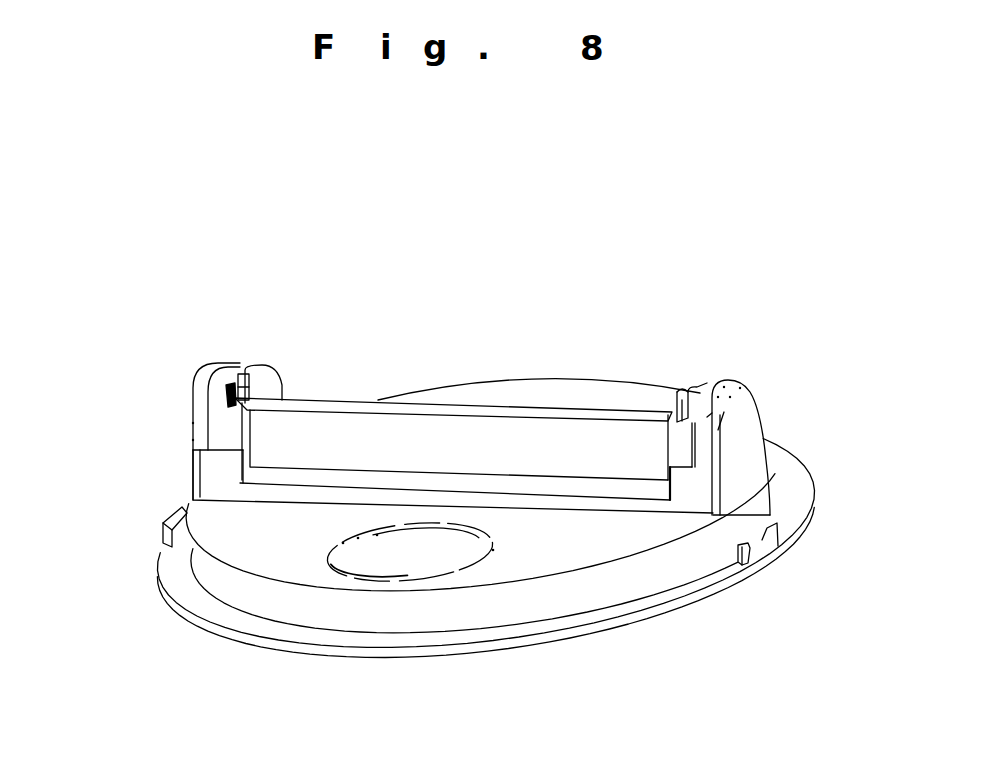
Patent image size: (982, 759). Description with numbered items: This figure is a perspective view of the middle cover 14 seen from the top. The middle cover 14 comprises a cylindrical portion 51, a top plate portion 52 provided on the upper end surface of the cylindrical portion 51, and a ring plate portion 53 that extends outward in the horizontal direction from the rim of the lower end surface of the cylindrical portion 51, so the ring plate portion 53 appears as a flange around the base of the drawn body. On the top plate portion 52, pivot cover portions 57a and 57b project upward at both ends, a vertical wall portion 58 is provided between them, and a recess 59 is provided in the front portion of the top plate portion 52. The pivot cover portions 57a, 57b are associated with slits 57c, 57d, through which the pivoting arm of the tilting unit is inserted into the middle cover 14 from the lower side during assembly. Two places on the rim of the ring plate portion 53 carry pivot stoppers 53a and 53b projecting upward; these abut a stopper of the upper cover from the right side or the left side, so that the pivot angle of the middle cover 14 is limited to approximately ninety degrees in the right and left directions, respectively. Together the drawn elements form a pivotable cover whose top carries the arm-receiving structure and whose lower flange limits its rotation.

The middle cover 14 is at (487, 268).
The cylindrical portion 51 is at (637, 577).
The top plate portion 52 is at (518, 562).
The ring plate portion 53 is at (725, 585).
The pivot stopper 53a is at (763, 550).
The pivot stopper 53b is at (163, 522).
The pivot cover portion 57a is at (740, 430).
The pivot cover portion 57b is at (207, 393).
The slit 57c is at (693, 387).
The slit 57d is at (241, 374).
The vertical wall portion 58 is at (340, 427).
The recess 59 is at (375, 582).